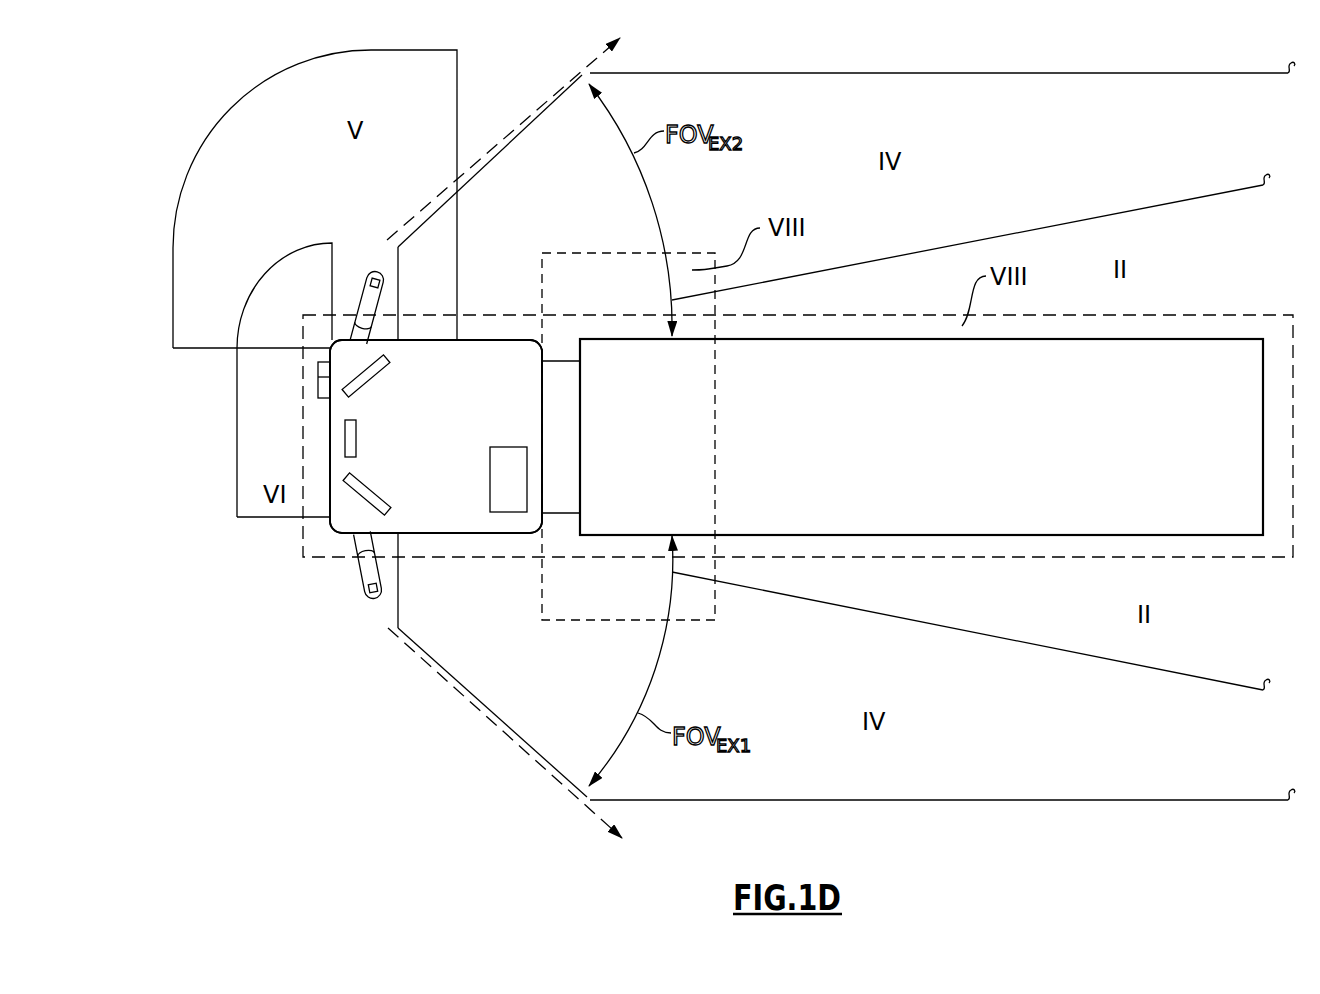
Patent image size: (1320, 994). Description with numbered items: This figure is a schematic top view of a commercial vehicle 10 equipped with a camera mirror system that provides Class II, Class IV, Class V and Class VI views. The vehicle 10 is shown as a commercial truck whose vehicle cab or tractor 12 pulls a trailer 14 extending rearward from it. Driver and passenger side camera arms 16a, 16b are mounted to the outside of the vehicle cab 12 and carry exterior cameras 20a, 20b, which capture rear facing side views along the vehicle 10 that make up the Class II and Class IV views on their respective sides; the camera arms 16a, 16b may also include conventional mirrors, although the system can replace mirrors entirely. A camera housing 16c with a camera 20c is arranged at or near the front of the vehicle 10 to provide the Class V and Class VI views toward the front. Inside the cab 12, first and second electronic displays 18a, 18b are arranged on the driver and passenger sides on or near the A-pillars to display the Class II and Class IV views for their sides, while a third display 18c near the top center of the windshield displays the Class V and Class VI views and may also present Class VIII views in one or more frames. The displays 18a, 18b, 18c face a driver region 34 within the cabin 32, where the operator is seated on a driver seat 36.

The commercial vehicle 10 is at (306, 328).
The tractor 12 is at (326, 530).
The trailer 14 is at (1174, 334).
The driver side camera arm 16a is at (367, 583).
The passenger side camera arm 16b is at (356, 298).
The camera housing 16c is at (318, 386).
The first electronic display 18a is at (380, 488).
The second electronic display 18b is at (380, 378).
The third display 18c is at (345, 437).
The exterior camera 20a is at (386, 590).
The exterior camera 20b is at (383, 282).
The camera 20c is at (318, 372).
The cabin 32 is at (482, 362).
The driver region 34 is at (484, 469).
The driver seat 36 is at (510, 450).